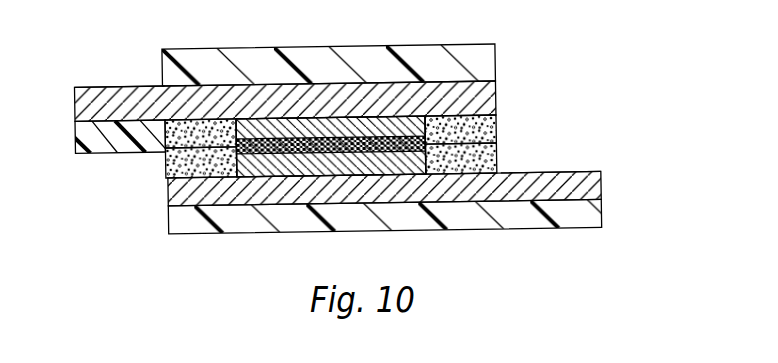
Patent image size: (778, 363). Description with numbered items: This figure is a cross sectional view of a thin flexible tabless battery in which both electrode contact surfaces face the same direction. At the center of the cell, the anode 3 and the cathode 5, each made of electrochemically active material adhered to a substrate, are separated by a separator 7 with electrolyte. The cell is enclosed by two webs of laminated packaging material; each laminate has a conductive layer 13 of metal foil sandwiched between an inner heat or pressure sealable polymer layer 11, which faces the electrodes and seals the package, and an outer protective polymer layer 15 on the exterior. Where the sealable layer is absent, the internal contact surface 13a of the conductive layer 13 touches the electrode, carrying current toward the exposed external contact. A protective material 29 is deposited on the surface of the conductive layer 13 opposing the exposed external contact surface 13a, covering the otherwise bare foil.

The anode 3 is at (337, 120).
The cathode 5 is at (298, 178).
The separator 7 is at (372, 148).
The inner heat or pressure sealable polymer layer 11 is at (497, 134).
The conductive layer 13 is at (496, 103).
The internal contact surface 13a is at (120, 86).
The outer protective polymer layer 15 is at (496, 71).
The protective material 29 is at (115, 138).